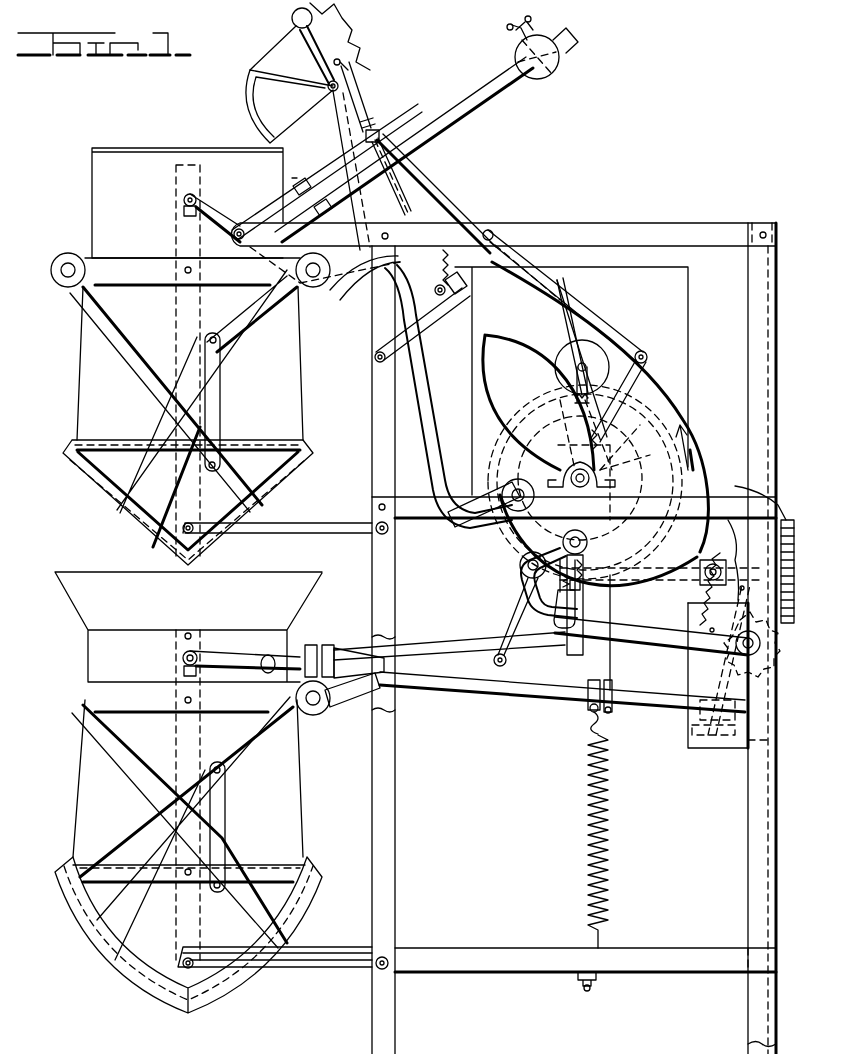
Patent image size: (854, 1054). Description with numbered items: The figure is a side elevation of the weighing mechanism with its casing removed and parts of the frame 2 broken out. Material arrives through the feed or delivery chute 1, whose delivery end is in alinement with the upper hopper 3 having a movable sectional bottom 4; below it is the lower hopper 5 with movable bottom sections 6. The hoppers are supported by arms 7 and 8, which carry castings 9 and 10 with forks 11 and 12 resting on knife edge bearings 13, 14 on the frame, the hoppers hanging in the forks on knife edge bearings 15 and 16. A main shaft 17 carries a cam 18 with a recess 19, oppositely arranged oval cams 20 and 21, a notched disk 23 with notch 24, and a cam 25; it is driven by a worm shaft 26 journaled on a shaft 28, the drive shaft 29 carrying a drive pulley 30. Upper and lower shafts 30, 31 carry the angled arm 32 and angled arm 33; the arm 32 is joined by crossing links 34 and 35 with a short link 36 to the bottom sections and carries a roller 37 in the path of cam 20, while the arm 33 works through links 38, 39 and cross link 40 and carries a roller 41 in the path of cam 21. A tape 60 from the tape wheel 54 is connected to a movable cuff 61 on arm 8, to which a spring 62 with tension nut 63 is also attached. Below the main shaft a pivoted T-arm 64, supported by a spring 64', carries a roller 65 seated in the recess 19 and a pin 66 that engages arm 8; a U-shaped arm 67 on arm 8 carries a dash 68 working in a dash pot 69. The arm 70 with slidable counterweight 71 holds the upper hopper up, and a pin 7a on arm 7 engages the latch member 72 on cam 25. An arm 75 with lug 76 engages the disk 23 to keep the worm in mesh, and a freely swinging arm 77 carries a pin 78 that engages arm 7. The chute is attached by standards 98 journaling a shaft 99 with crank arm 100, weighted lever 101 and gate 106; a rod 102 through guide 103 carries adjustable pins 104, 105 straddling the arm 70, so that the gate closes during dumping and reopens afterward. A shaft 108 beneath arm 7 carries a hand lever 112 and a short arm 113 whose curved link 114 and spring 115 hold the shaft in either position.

The feed or delivery chute 1 is at (268, 68).
The frame 2 is at (503, 234).
The upper hopper 3 is at (92, 205).
The movable sectional bottom 4 is at (95, 494).
The lower hopper 5 is at (92, 652).
The movable bottom sections 6 is at (135, 980).
The arm 7 is at (450, 214).
The pin 7a is at (635, 345).
The arm 8 is at (455, 686).
The casting 9 is at (326, 172).
The casting 10 is at (345, 650).
The fork 11 is at (260, 210).
The fork 12 is at (300, 655).
The knife edge bearing 13 is at (240, 250).
The knife edge bearing 14 is at (268, 655).
The knife edge bearing 15 is at (184, 202).
The knife edge bearing 16 is at (183, 658).
The main shaft 17 is at (575, 470).
The cam 18 is at (508, 533).
The recess 19 is at (522, 555).
The cam 20 is at (538, 402).
The cam 21 is at (598, 515).
The disk 23 is at (631, 457).
The notch 24 is at (610, 450).
The cam 25 is at (700, 446).
The worm shaft 26 is at (578, 628).
The shaft 28 is at (704, 574).
The drive shaft 29 is at (595, 585).
The upper shaft 30 is at (438, 425).
The lower shaft 31 is at (450, 655).
The angled arm 32 is at (362, 292).
The angled arm 33 is at (348, 708).
The link 34 is at (112, 328).
The link 35 is at (258, 318).
The short link 36 is at (222, 388).
The roller 37 is at (510, 488).
The link 38 is at (112, 757).
The link 39 is at (262, 740).
The cross link 40 is at (225, 815).
The roller 41 is at (562, 545).
The tape wheel 54 is at (568, 360).
The tape 60 is at (610, 672).
The movable cuff 61 is at (612, 720).
The spring 62 is at (585, 808).
The tension nut 63 is at (585, 990).
The T-arm 64 is at (651, 634).
The spring 64' is at (718, 644).
The roller 65 is at (520, 572).
The pin 66 is at (498, 668).
The U-shaped arm 67 is at (726, 547).
The dash 68 is at (700, 730).
The dash pot 69 is at (720, 740).
The arm 70 is at (485, 98).
The slidable counterweight 71 is at (543, 82).
The latch member 72 is at (648, 372).
The arm 75 is at (686, 481).
The lug 76 is at (618, 418).
The arm 77 is at (580, 325).
The pin 78 is at (560, 290).
The standards 98 is at (345, 82).
The shaft 99 is at (330, 94).
The crank arm 100 is at (360, 62).
The weighted lever 101 is at (305, 28).
The rod 102 is at (358, 104).
The guide 103 is at (372, 118).
The adjustable pin 104 is at (380, 134).
The adjustable pin 105 is at (400, 190).
The gate 106 is at (242, 100).
The shaft 108 is at (448, 300).
The hand lever 112 is at (355, 322).
The short arm 113 is at (458, 305).
The curved link 114 is at (455, 298).
The spring 115 is at (425, 267).